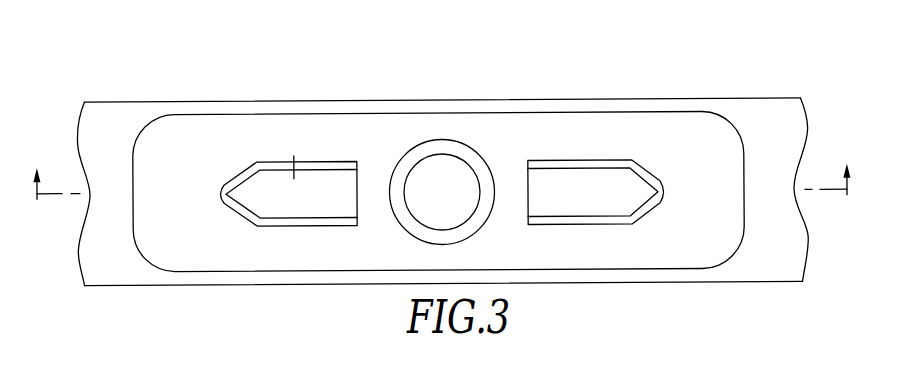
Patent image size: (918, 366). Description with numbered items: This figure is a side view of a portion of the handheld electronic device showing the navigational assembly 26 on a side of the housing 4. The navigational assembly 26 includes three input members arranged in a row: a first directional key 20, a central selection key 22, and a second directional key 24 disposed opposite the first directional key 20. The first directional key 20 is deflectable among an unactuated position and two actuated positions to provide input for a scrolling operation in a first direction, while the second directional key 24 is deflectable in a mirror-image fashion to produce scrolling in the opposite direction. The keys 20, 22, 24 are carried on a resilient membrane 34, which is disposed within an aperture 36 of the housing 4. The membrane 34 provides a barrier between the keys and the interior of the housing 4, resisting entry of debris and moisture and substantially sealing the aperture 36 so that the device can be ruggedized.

The housing 4 is at (140, 110).
The first directional key 20 is at (272, 176).
The selection key 22 is at (428, 170).
The second directional key 24 is at (583, 173).
The navigational assembly 26 is at (362, 84).
The resilient membrane 34 is at (707, 139).
The aperture 36 is at (672, 113).